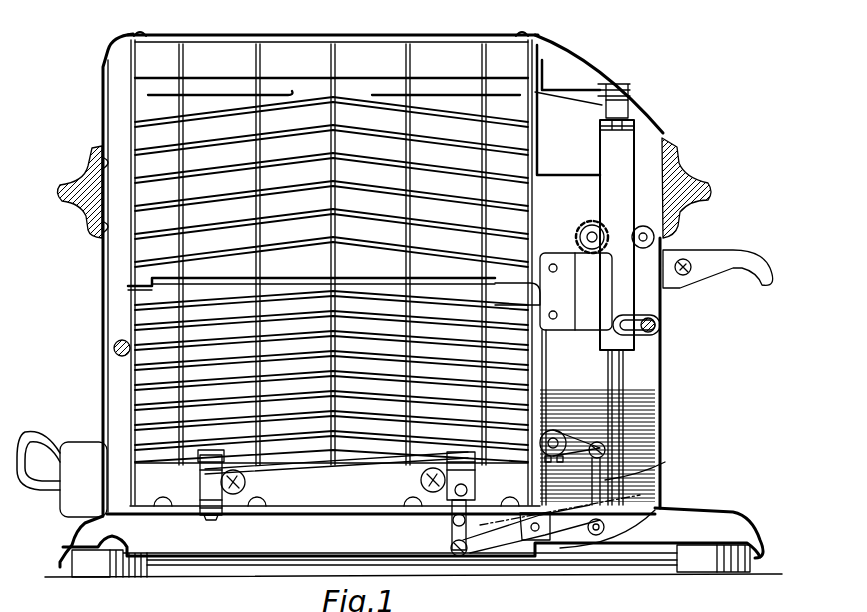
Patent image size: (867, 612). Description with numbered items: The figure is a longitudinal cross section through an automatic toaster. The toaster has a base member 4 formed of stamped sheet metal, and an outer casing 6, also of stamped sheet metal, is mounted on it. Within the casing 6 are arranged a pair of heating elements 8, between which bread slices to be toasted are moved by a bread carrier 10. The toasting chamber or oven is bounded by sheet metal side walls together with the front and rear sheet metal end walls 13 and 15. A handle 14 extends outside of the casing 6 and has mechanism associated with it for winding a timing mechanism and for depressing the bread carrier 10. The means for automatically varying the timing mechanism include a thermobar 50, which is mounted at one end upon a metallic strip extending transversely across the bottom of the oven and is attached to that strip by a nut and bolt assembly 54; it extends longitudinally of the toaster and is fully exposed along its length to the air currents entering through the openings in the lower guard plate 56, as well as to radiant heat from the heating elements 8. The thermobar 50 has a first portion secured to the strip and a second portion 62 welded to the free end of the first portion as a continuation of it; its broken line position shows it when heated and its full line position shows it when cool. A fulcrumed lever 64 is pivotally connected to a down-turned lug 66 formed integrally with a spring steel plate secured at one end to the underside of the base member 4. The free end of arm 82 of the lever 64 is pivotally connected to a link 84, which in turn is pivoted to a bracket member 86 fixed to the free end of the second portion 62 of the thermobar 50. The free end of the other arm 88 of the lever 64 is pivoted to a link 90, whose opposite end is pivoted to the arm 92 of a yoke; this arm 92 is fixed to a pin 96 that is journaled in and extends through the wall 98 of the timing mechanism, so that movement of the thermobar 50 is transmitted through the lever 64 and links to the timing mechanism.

The base member 4 is at (710, 512).
The outer casing 6 is at (670, 120).
The heating elements 8 is at (362, 82).
The bread carrier 10 is at (165, 288).
The front end wall 13 is at (540, 57).
The handle 14 is at (732, 255).
The rear end wall 15 is at (130, 116).
The thermobar 50 is at (298, 491).
The nut and bolt assembly 54 is at (200, 485).
The lower guard plate 56 is at (208, 560).
The second portion 62 is at (410, 470).
The fulcrumed lever 64 is at (515, 552).
The down-turned lug 66 is at (545, 540).
The arm 82 is at (488, 555).
The link 84 is at (452, 520).
The bracket member 86 is at (476, 493).
The arm 88 is at (574, 532).
The link 90 is at (612, 477).
The arm 92 is at (597, 440).
The pin 96 is at (558, 432).
The wall 98 is at (655, 417).